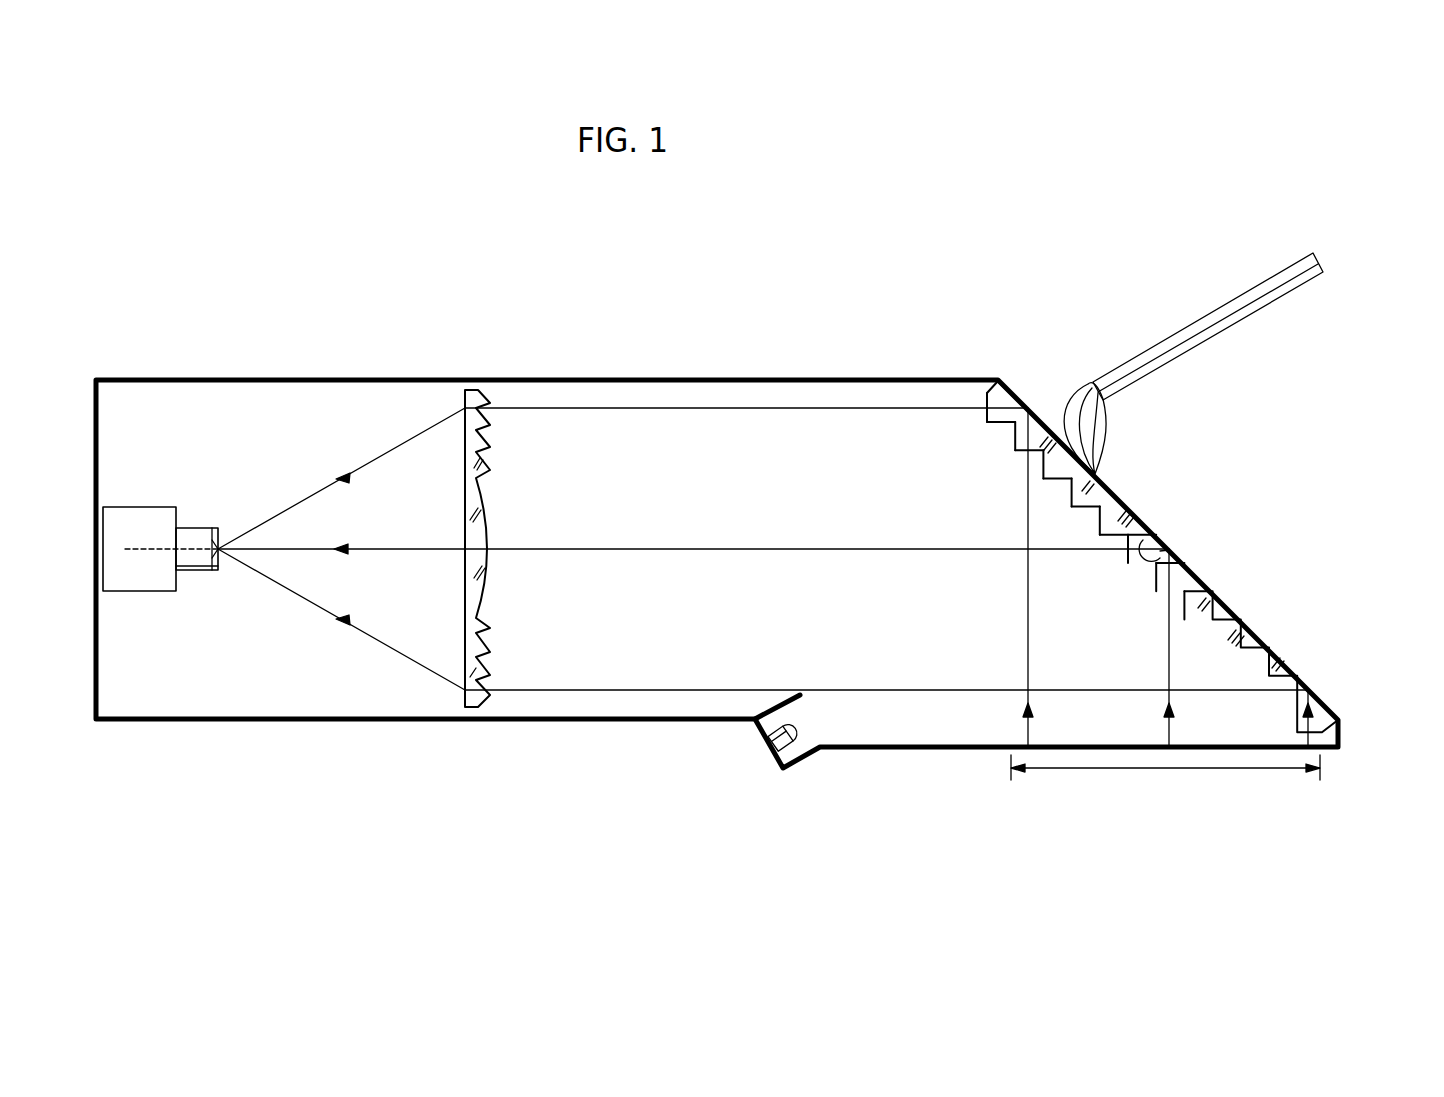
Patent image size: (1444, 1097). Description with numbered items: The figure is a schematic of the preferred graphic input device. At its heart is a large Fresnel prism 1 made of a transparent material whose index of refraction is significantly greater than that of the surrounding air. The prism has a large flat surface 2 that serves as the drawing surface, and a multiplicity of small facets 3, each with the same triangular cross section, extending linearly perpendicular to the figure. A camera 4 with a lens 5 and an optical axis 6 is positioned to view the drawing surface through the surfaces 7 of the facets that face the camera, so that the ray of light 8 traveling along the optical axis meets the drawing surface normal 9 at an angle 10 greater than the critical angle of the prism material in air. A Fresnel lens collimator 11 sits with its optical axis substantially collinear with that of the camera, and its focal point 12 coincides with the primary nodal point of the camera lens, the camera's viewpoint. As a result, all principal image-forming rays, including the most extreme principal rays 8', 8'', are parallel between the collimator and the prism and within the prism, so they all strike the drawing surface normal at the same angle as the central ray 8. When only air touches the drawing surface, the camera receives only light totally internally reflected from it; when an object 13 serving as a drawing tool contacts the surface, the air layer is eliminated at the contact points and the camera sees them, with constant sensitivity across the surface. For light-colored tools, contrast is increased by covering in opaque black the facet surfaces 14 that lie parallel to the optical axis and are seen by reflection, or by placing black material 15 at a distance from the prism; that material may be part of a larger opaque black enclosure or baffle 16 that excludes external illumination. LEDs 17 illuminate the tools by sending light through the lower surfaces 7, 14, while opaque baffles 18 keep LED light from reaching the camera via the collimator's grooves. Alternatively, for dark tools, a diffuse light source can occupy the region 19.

The Fresnel prism 1 is at (1255, 640).
The flat surface 2 is at (1225, 605).
The facets 3 is at (1138, 556).
The camera 4 is at (123, 582).
The lens 5 is at (192, 535).
The optical axis 6 is at (148, 548).
The facet surfaces oriented towards the camera 7 is at (985, 421).
The central ray of light 8 is at (693, 521).
The extreme principal ray 8' is at (763, 620).
The extreme principal ray 8'' is at (623, 478).
The drawing surface normal 9 is at (1176, 558).
The angle 10 is at (1148, 545).
The Fresnel lens collimator 11 is at (470, 388).
The focal point 12 is at (207, 550).
The object 13 is at (1190, 338).
The facet surfaces parallel to the optical axis 14 is at (1057, 480).
The black material 15 is at (1106, 745).
The enclosure or baffle 16 is at (848, 380).
The LEDs 17 is at (800, 742).
The opaque baffles 18 is at (790, 700).
The region 19 is at (1140, 770).